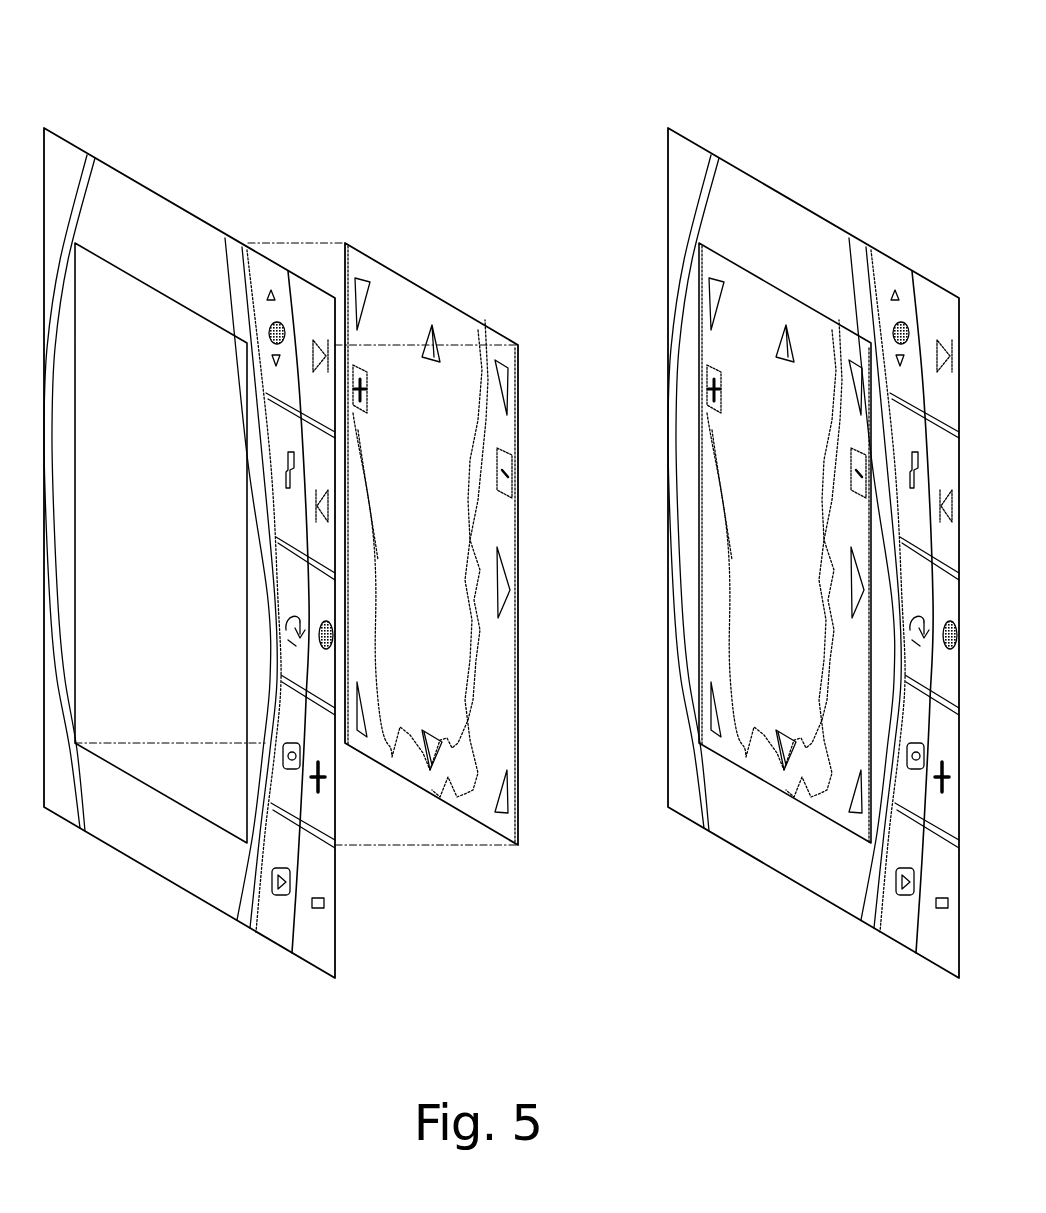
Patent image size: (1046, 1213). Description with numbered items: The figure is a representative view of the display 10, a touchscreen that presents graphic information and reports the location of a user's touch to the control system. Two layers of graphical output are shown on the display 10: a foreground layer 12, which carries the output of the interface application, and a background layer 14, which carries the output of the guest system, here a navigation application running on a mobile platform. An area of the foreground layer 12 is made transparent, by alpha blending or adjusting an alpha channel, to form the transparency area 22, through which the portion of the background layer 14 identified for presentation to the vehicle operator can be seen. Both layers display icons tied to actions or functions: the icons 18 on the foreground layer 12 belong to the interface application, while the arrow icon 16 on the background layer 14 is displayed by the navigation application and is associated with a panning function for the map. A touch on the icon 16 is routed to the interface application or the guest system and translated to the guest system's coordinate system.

The display 10 is at (222, 115).
The foreground layer 12 is at (120, 173).
The background layer 14 is at (459, 310).
The icon 16 is at (436, 362).
The icon 18 is at (310, 262).
The transparency area 22 is at (135, 505).